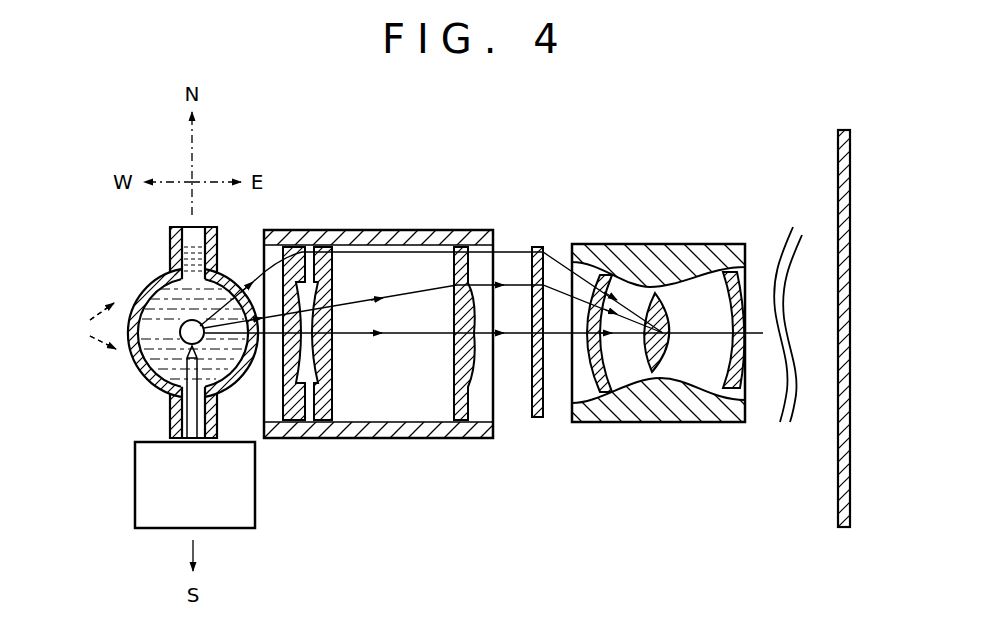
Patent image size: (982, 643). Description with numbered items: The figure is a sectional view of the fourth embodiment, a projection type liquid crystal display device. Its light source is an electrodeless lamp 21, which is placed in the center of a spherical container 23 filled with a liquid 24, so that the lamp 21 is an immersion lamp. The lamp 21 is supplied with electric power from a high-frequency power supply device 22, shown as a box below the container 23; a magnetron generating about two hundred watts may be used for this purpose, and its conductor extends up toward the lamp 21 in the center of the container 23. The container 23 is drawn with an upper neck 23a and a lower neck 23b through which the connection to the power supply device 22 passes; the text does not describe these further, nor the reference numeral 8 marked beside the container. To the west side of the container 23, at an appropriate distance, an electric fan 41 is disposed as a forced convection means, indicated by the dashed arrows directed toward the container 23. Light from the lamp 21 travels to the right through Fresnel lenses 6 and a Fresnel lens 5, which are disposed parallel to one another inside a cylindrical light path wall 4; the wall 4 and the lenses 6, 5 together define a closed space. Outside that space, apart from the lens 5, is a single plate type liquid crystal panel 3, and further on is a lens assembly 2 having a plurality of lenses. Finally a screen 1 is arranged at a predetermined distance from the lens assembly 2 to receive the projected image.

The screen 1 is at (843, 508).
The lens assembly 2 is at (673, 422).
The single plate type liquid crystal panel 3 is at (538, 418).
The cylindrical light path wall 4 is at (372, 438).
The Fresnel lens 5 is at (457, 432).
The Fresnel lens 6 is at (292, 422).
The cooling air flow 8 is at (91, 326).
The electrodeless lamp 21 is at (182, 337).
The high-frequency power supply device 22 is at (158, 518).
The spherical container 23 is at (145, 294).
The upper tube 23a is at (218, 240).
The lower tube 23b is at (218, 415).
The liquid 24 is at (153, 387).
The electric fan 41 is at (72, 333).